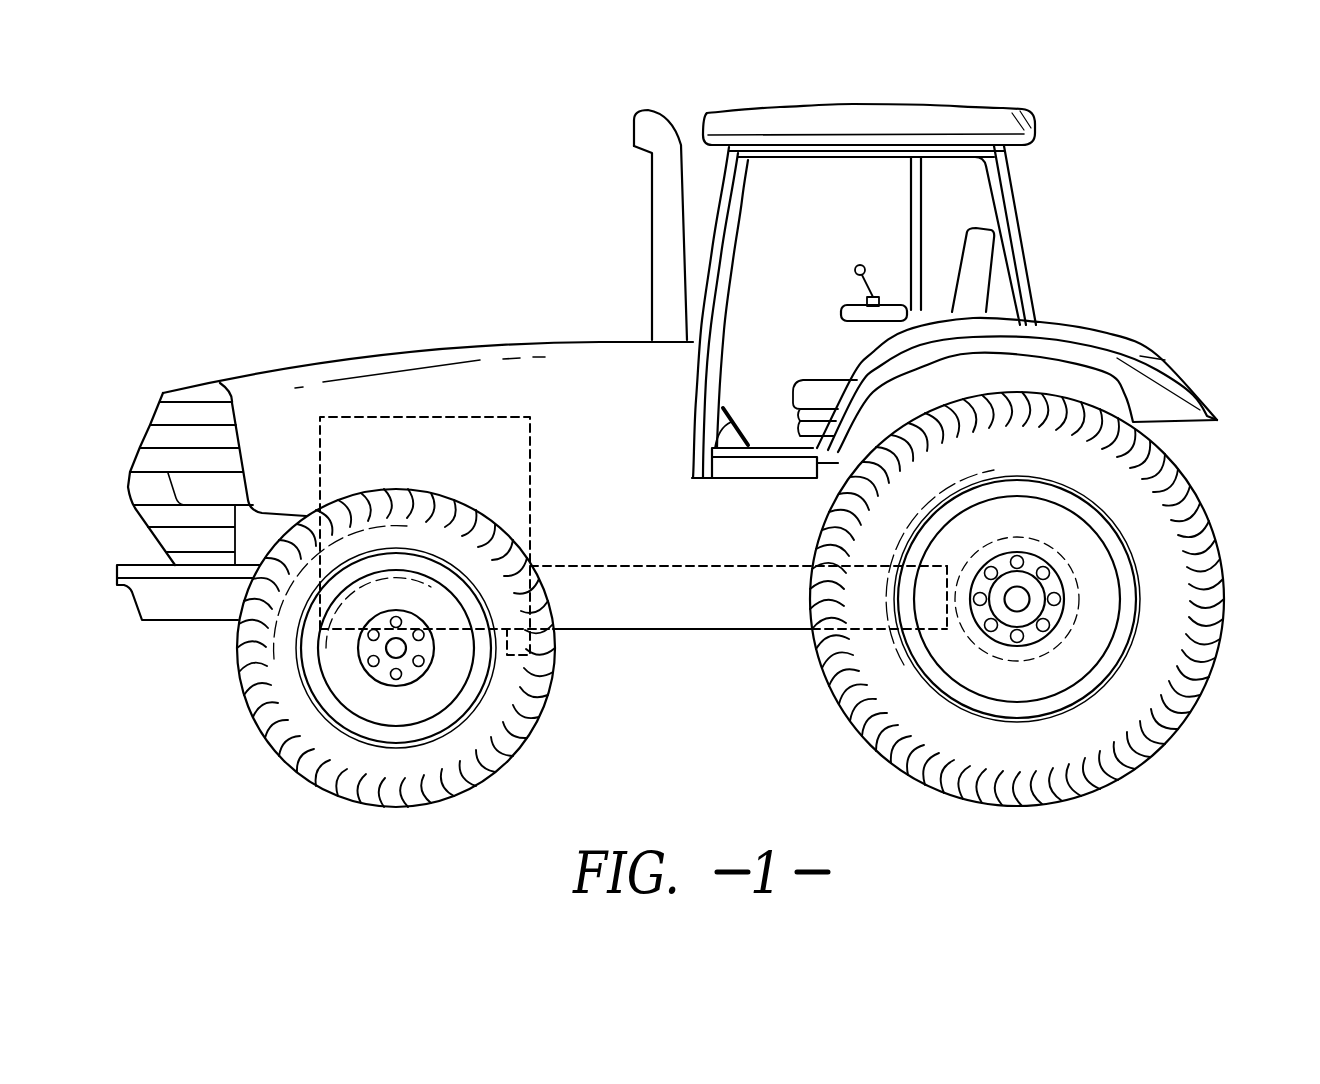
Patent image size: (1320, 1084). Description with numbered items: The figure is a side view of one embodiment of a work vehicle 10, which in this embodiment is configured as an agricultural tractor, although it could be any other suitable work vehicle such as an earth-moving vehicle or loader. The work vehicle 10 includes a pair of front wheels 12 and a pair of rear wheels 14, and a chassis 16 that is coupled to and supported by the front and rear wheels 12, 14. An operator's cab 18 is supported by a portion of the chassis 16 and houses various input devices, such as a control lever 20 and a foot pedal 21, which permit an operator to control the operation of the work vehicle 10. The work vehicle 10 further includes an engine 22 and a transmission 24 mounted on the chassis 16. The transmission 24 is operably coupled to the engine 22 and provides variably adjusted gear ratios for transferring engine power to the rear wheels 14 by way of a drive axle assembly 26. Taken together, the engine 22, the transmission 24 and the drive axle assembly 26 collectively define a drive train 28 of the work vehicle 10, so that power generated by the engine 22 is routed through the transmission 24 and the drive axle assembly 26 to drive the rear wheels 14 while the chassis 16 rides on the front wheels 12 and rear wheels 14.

The work vehicle 10 is at (323, 245).
The front wheels 12 is at (238, 667).
The rear wheels 14 is at (1227, 637).
The chassis 16 is at (625, 632).
The operator's cab 18 is at (1024, 240).
The control lever 20 is at (855, 268).
The foot pedal 21 is at (748, 428).
The engine 22 is at (397, 417).
The transmission 24 is at (692, 565).
The drive axle assembly 26 is at (1095, 600).
The drive train 28 is at (590, 378).